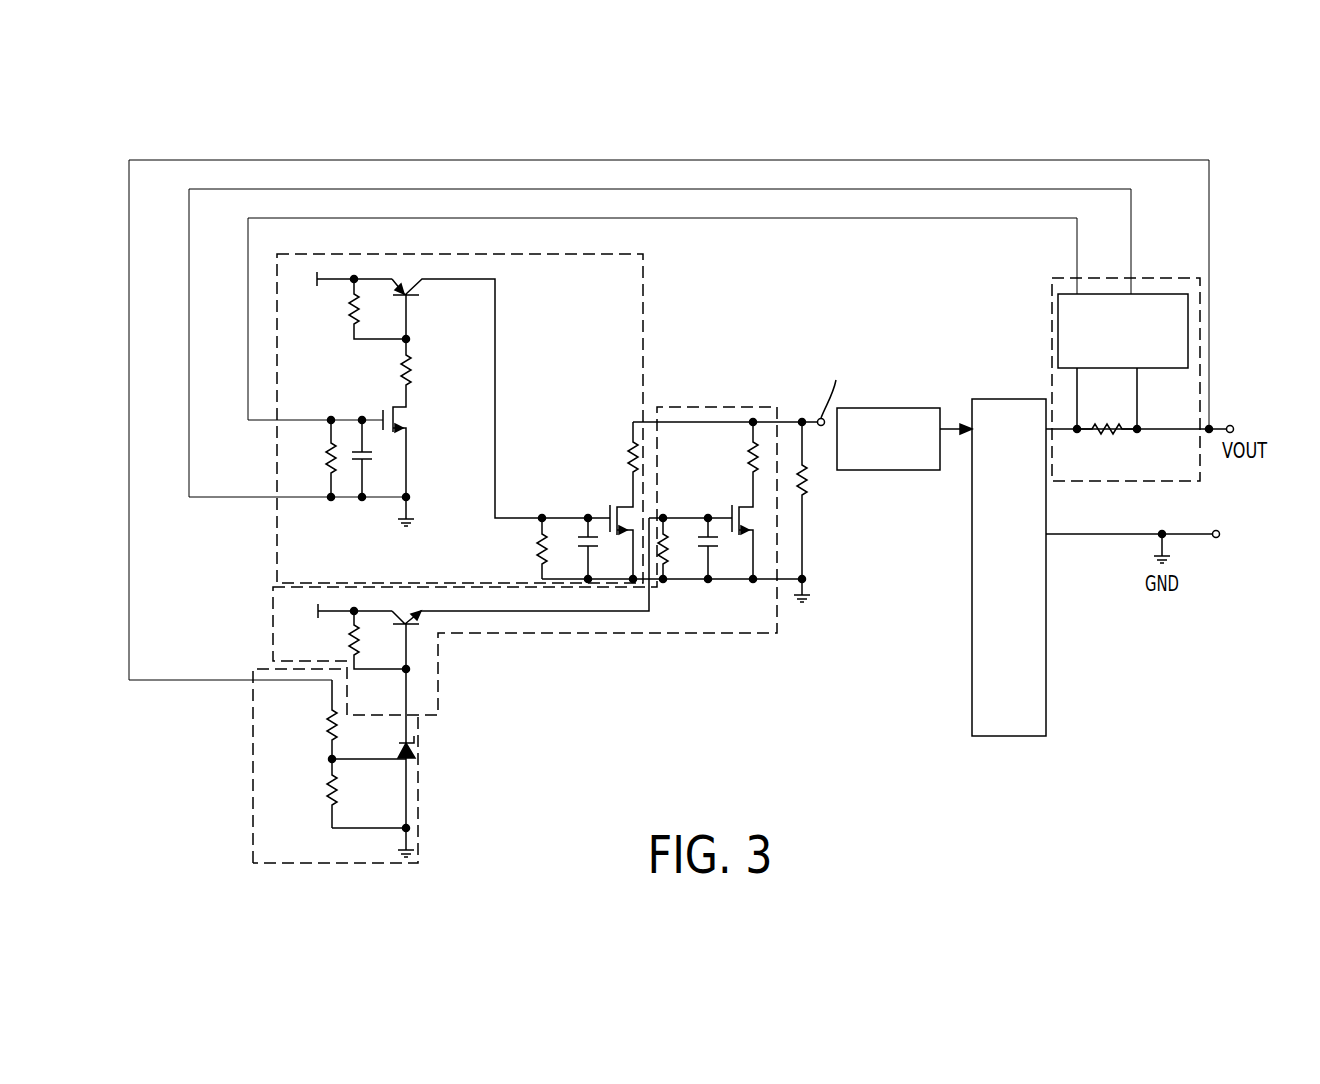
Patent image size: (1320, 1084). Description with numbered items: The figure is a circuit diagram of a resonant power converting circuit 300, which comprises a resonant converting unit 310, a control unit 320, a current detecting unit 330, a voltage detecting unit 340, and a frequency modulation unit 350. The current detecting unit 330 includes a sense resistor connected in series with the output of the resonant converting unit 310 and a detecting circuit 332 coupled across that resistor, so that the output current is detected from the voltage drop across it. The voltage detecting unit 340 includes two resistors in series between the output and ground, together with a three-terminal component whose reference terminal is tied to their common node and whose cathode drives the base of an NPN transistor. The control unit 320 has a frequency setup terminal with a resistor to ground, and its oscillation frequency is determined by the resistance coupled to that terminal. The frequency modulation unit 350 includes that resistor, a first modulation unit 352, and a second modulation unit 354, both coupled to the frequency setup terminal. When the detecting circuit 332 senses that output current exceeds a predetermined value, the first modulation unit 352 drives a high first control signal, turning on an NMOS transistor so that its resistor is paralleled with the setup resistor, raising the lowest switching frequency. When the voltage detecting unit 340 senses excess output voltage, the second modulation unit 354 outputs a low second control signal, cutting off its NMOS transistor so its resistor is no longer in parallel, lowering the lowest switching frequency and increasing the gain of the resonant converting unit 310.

The resonant power converting circuit 300 is at (1226, 136).
The resonant converting unit 310 is at (992, 399).
The control unit 320 is at (918, 408).
The current detecting unit 330 is at (1121, 376).
The detecting circuit 332 is at (1190, 346).
The voltage detecting unit 340 is at (420, 790).
The frequency modulation unit 350 is at (567, 484).
The first modulation unit 352 is at (643, 316).
The second modulation unit 354 is at (700, 406).